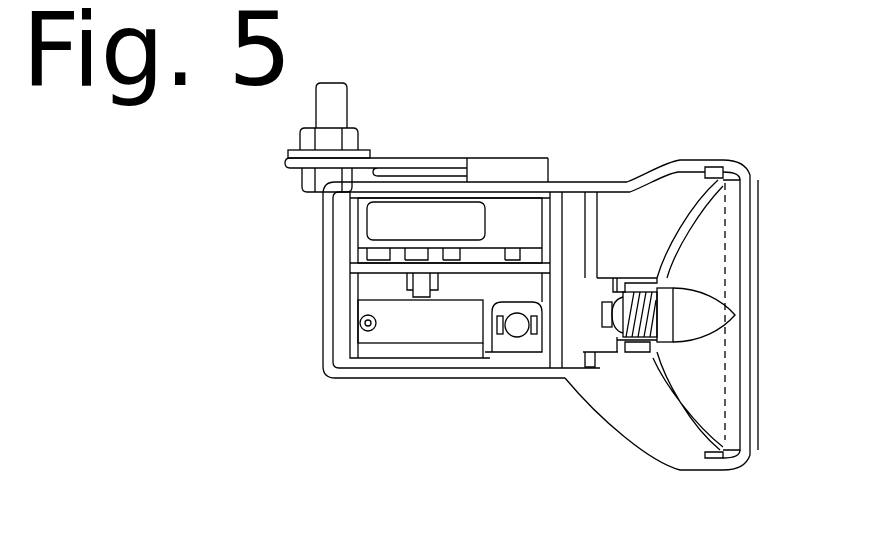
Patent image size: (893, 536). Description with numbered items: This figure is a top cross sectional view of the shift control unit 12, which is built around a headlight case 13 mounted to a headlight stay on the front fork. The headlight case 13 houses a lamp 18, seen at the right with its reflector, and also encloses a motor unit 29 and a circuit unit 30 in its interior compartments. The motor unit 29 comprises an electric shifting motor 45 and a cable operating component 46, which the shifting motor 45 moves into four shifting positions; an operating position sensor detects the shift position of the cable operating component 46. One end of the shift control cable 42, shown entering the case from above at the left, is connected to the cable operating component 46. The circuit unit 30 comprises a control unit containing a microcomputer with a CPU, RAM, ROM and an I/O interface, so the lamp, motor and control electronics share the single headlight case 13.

The shift control unit 12 is at (570, 147).
The headlight case 13 is at (580, 182).
The lamp 18 is at (695, 307).
The motor unit 29 is at (445, 358).
The circuit unit 30 is at (438, 215).
The shift control cable 42 is at (335, 113).
The electric shifting motor 45 is at (497, 343).
The cable operating component 46 is at (408, 335).